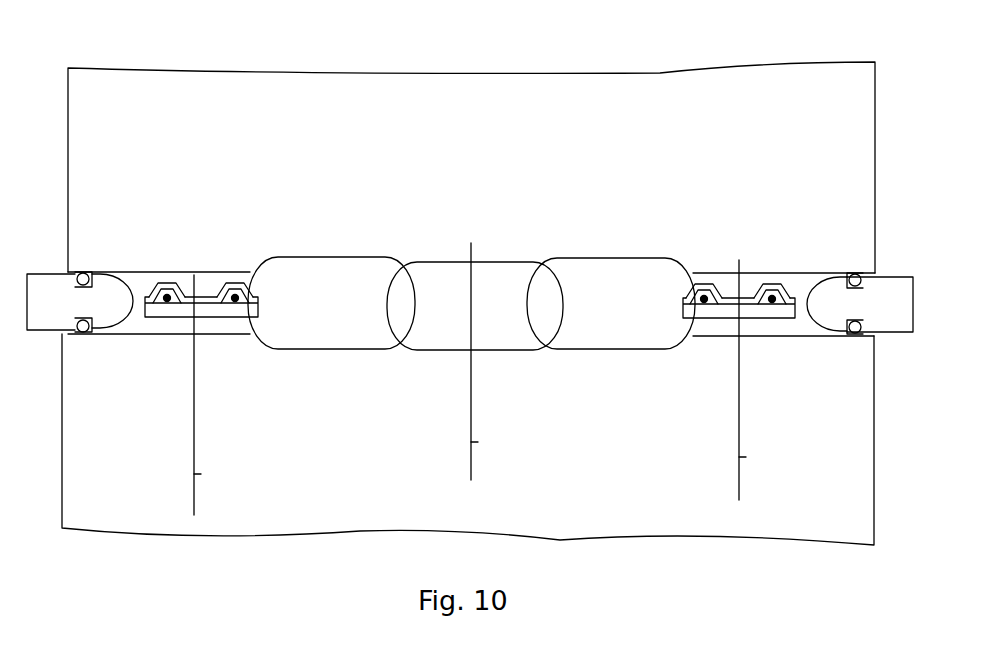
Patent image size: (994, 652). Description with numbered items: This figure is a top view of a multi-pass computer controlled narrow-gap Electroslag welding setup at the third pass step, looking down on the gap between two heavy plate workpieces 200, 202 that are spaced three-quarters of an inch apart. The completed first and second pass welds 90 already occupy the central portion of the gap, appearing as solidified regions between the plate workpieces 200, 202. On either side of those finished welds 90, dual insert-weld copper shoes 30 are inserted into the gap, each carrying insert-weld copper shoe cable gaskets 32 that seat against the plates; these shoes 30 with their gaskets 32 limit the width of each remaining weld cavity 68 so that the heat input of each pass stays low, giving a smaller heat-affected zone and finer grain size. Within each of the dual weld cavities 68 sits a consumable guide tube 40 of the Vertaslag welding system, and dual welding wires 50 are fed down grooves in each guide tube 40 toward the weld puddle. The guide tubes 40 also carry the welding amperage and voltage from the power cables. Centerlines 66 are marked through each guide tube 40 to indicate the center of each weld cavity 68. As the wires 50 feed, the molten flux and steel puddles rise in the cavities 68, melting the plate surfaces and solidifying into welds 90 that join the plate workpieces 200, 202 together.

The plate workpiece 200 is at (150, 107).
The plate workpiece 202 is at (80, 510).
The insert-weld copper shoe 30 is at (50, 297).
The insert-weld copper shoe cable gasket 32 is at (82, 273).
The consumable guide tube 40 is at (208, 312).
The welding wire 50 is at (164, 296).
The centerline 66 is at (194, 420).
The weld cavity 68 is at (210, 282).
The narrow-gap Electroslag weld 90 is at (323, 290).